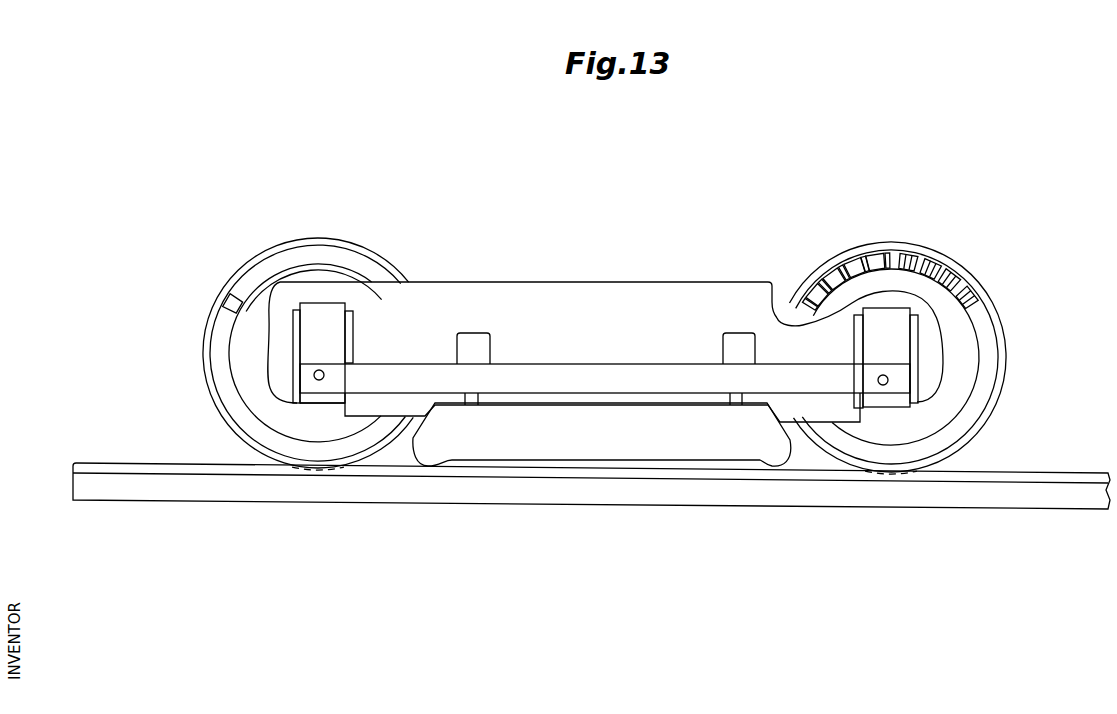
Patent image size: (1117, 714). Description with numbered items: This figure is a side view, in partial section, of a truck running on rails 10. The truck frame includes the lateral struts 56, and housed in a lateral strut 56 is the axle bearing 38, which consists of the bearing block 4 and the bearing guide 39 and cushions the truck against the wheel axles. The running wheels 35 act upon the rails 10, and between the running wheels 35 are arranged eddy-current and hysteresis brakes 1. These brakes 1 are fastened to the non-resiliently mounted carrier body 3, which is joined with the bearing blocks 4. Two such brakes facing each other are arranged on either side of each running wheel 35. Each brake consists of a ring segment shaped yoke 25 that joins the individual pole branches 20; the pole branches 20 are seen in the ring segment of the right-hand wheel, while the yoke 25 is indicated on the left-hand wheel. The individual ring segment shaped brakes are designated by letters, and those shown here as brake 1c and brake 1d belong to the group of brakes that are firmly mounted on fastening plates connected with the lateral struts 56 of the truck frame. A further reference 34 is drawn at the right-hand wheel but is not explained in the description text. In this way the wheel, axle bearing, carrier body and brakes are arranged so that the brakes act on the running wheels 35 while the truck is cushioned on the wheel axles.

The eddy-current and hysteresis brake 1 is at (508, 445).
The ring segment shaped eddy-current and hysteresis brake 1c is at (355, 251).
The ring segment shaped eddy-current and hysteresis brake 1d is at (873, 247).
The carrier body 3 is at (403, 380).
The bearing block 4 is at (318, 313).
The rail 10 is at (1038, 498).
The pole branch 20 is at (918, 267).
The ring segment shaped yoke 25 is at (303, 255).
The wheel hub 34 is at (987, 347).
The running wheel 35 is at (980, 285).
The axle bearing 38 is at (292, 373).
The bearing guide 39 is at (293, 347).
The lateral strut 56 is at (537, 300).